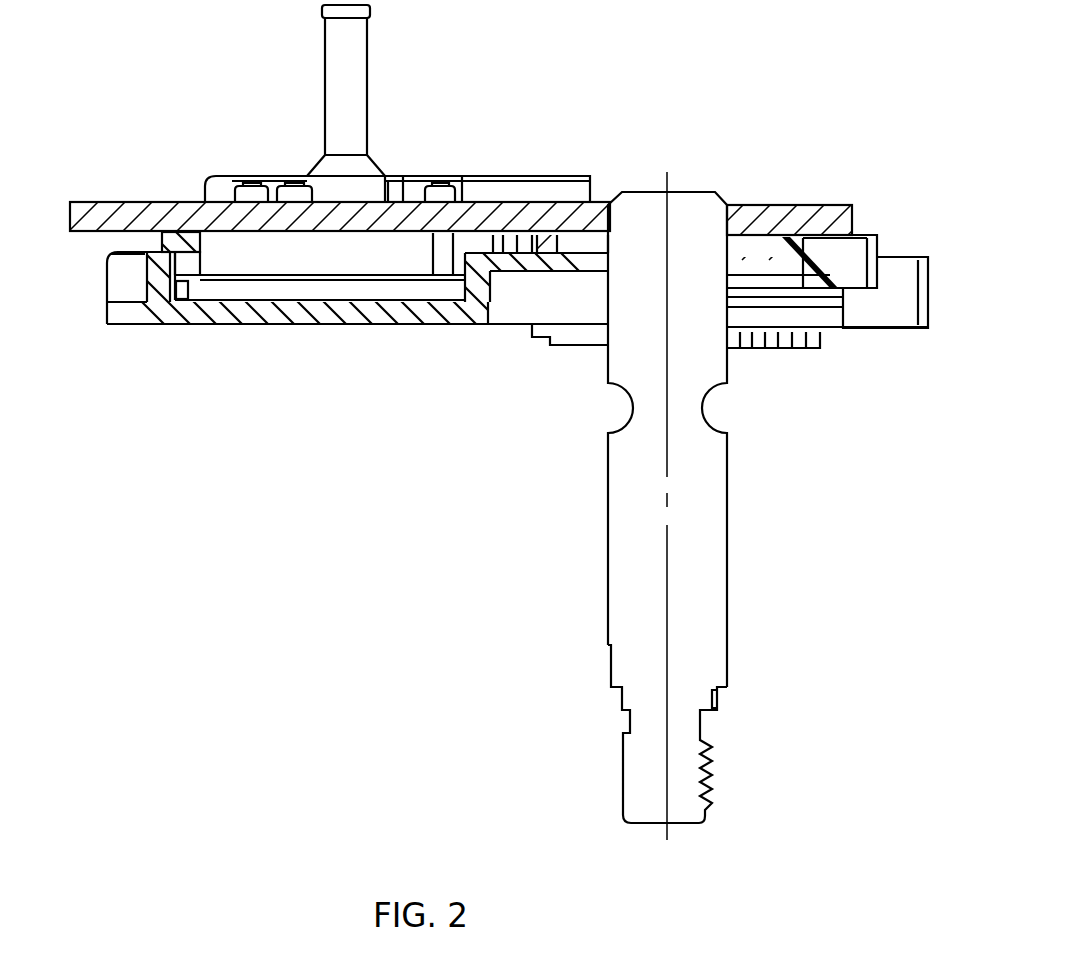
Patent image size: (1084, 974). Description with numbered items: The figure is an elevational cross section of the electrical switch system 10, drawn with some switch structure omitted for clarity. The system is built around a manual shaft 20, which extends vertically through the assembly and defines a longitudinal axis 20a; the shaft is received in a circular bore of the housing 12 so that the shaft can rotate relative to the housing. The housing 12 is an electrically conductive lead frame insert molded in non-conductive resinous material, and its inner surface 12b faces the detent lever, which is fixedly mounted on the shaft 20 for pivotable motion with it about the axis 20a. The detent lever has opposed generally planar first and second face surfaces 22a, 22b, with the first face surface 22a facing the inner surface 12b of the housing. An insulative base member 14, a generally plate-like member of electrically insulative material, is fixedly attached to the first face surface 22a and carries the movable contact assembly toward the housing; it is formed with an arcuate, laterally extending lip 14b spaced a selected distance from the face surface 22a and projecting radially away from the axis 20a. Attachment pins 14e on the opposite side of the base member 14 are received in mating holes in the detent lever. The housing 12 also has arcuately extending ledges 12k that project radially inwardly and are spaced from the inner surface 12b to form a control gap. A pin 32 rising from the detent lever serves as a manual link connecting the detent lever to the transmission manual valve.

The electrical switch system 10 is at (755, 23).
The housing 12 is at (320, 324).
The inner surface of housing 12b is at (226, 297).
The arcuately extending ledges 12k is at (185, 240).
The insulative base member 14 is at (397, 285).
The lip 14b is at (188, 268).
The attachment pins 14e is at (291, 184).
The manual shaft 20 is at (713, 520).
The longitudinal axis 20a is at (668, 645).
The first face surface 22a is at (98, 233).
The second face surface 22b is at (155, 152).
The pin 32 is at (358, 80).